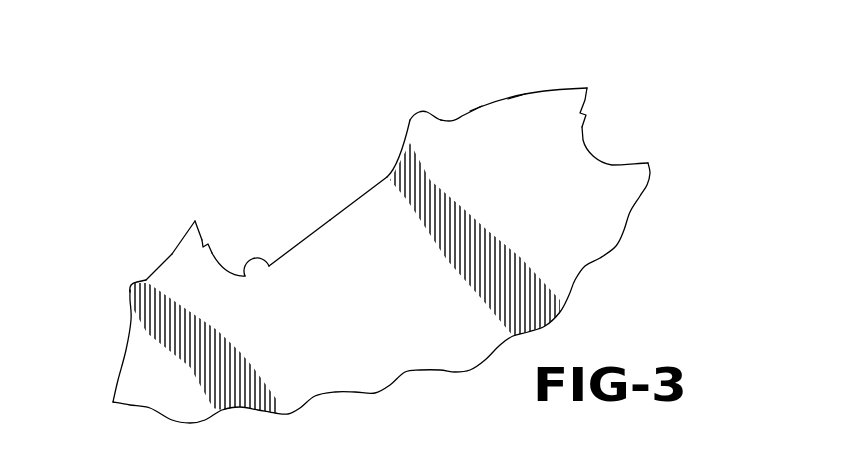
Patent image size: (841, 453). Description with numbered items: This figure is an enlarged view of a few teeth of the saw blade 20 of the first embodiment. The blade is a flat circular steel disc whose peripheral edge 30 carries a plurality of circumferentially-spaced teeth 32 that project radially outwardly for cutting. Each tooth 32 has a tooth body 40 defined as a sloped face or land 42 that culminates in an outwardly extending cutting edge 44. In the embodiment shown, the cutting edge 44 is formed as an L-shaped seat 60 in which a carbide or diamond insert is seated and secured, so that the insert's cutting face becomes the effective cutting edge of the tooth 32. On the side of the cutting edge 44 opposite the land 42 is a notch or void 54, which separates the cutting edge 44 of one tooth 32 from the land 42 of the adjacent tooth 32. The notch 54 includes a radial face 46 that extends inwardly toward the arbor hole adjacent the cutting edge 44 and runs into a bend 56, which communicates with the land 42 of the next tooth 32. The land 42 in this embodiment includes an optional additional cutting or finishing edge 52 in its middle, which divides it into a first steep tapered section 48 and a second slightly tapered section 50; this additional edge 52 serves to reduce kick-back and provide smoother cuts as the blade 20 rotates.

The saw blade 20 is at (241, 102).
The peripheral edge 30 is at (347, 186).
The tooth 32 is at (134, 247).
The tooth body 40 is at (478, 103).
The land 42 is at (513, 100).
The cutting edge 44 is at (195, 222).
The radial face 46 is at (214, 254).
The first steep tapered section 48 is at (405, 142).
The second slightly tapered section 50 is at (172, 250).
The additional cutting edge 52 is at (131, 283).
The notch 54 is at (334, 211).
The bend 56 is at (268, 266).
The L-shaped seat 60 is at (204, 241).